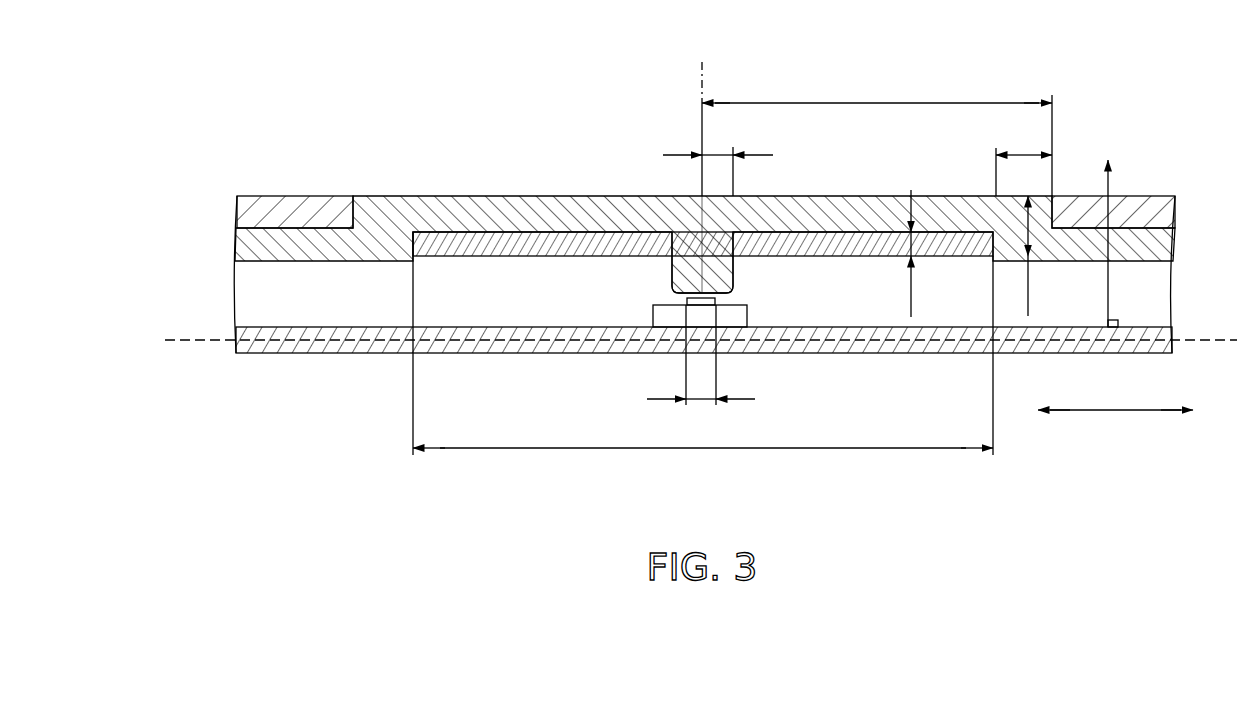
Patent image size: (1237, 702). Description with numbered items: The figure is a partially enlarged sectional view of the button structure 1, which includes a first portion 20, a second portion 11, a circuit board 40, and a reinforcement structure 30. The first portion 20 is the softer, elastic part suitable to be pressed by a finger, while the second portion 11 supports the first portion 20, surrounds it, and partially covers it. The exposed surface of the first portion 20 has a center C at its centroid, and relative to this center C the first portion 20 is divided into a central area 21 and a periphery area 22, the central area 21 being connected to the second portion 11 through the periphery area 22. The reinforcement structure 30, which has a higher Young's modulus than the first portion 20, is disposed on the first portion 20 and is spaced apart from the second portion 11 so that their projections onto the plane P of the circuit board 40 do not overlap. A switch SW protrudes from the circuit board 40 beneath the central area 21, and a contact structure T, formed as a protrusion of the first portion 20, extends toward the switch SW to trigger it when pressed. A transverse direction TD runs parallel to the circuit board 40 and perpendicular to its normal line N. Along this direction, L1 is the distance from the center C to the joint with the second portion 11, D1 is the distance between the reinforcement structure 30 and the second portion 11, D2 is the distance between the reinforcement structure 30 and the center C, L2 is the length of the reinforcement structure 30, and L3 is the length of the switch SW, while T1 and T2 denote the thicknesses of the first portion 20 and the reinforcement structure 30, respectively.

The button structure 1 is at (701, 258).
The second portion 11 is at (1142, 190).
The first portion 20 is at (705, 197).
The central area 21 is at (672, 190).
The periphery area 22 is at (384, 190).
The reinforcement structure 30 is at (822, 243).
The circuit board 40 is at (895, 343).
The contact structure T is at (685, 277).
The switch SW is at (727, 315).
The center C is at (702, 70).
The plane P is at (1218, 340).
The normal line N is at (1108, 228).
The transverse direction TD is at (1115, 426).
The distance between center and joint L1 is at (877, 135).
The length of the reinforcement structure L2 is at (703, 356).
The length of the switch L3 is at (701, 371).
The distance between reinforcement structure and second portion D1 is at (1024, 161).
The distance between reinforcement structure and center D2 is at (718, 160).
The thickness of the first portion T1 is at (1045, 256).
The thickness of the reinforcement structure T2 is at (928, 254).